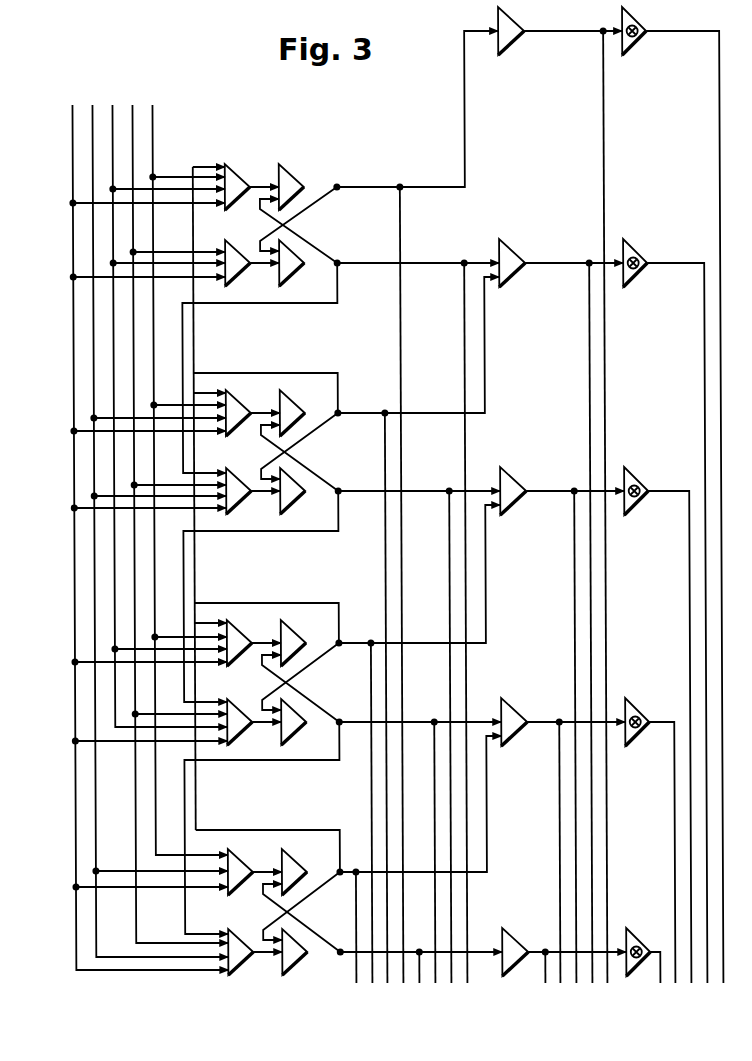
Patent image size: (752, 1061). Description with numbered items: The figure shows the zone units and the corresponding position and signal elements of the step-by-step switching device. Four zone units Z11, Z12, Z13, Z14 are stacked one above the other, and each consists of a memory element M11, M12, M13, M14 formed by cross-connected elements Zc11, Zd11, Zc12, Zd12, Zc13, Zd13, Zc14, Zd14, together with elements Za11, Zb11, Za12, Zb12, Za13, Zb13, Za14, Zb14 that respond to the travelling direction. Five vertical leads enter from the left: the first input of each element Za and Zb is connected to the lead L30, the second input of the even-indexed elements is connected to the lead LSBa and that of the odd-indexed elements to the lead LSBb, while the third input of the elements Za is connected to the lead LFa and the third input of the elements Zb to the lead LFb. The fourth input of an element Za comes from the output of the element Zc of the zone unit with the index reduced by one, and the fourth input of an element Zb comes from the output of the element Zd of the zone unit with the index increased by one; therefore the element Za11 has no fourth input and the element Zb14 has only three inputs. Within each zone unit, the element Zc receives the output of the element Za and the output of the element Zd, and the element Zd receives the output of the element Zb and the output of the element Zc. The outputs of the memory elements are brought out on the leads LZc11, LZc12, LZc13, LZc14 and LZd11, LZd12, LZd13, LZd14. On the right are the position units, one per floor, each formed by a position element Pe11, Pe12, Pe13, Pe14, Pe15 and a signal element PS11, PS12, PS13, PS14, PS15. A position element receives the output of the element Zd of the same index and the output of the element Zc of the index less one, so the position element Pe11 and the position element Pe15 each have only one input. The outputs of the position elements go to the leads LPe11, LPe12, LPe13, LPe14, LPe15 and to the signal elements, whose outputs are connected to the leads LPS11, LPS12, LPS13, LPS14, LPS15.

The lead L30 is at (140, 537).
The lead LSBb is at (150, 531).
The lead LSBa is at (159, 416).
The lead LFb is at (170, 524).
The lead LFa is at (179, 480).
The element Za14 is at (252, 154).
The element Zb14 is at (245, 271).
The element Zc14 is at (306, 154).
The element Zd14 is at (300, 271).
The zone unit Z14 is at (254, 225).
The memory element M14 is at (308, 225).
The element Za13 is at (252, 380).
The element Zb13 is at (245, 499).
The element Zc13 is at (306, 380).
The element Zd13 is at (300, 499).
The zone unit Z13 is at (255, 452).
The memory element M13 is at (309, 452).
The element Za12 is at (252, 610).
The element Zb12 is at (245, 730).
The element Zc12 is at (306, 610).
The element Zd12 is at (300, 730).
The zone unit Z12 is at (256, 682).
The memory element M12 is at (310, 683).
The element Za11 is at (252, 839).
The element Zb11 is at (245, 969).
The element Zc11 is at (306, 839).
The element Zd11 is at (297, 969).
The zone unit Z11 is at (257, 912).
The memory element M11 is at (311, 912).
The position element Pe15 is at (517, 41).
The position element Pe14 is at (517, 273).
The position element Pe13 is at (517, 501).
The position element Pe12 is at (517, 732).
The position element Pe11 is at (520, 942).
The signal element PS15 is at (642, 40).
The signal element PS14 is at (642, 272).
The signal element PS13 is at (642, 500).
The signal element PS12 is at (637, 739).
The signal element PS11 is at (643, 942).
The lead LZc11 is at (353, 953).
The lead LZc12 is at (368, 839).
The lead LZc13 is at (383, 724).
The lead LZc14 is at (398, 611).
The lead LZd11 is at (415, 993).
The lead LZd12 is at (431, 878).
The lead LZd13 is at (446, 763).
The lead LZd14 is at (462, 649).
The lead LPe11 is at (541, 993).
The lead LPe12 is at (556, 878).
The lead LPe13 is at (571, 763).
The lead LPe14 is at (587, 649).
The lead LPe15 is at (602, 533).
The lead LPS11 is at (656, 994).
The lead LPS12 is at (665, 879).
The lead LPS13 is at (672, 764).
The lead LPS14 is at (680, 650).
The lead LPS15 is at (688, 534).